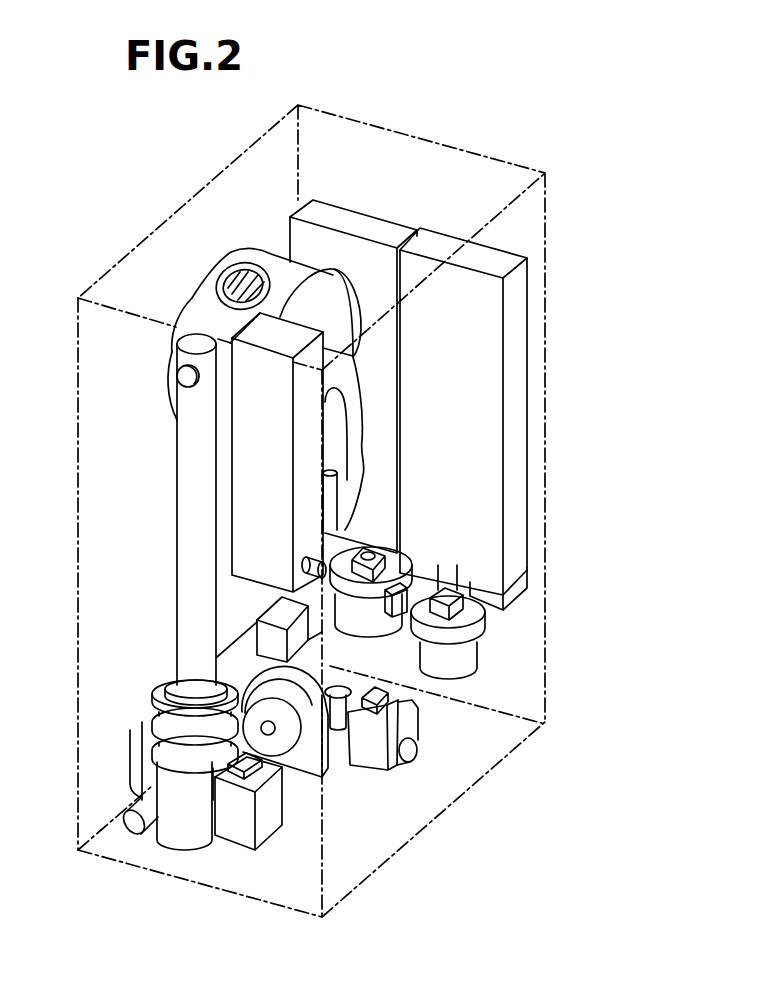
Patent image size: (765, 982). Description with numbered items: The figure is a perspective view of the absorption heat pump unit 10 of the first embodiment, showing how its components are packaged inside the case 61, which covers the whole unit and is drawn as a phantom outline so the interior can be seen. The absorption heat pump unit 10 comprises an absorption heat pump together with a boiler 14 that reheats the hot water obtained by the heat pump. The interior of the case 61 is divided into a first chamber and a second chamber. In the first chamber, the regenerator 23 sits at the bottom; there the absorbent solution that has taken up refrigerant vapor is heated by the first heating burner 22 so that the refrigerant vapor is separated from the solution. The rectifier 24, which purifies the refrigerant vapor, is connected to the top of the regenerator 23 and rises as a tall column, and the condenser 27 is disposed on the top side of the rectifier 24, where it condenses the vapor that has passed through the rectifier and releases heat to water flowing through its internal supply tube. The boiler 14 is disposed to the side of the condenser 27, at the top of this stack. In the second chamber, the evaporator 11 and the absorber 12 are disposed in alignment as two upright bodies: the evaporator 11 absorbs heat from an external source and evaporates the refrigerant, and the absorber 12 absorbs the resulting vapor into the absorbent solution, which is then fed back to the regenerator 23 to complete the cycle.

The absorption heat pump unit 10 is at (533, 125).
The evaporator 11 is at (503, 258).
The absorber 12 is at (356, 212).
The boiler 14 is at (200, 309).
The first heating burner 22 is at (233, 825).
The regenerator 23 is at (178, 815).
The rectifier 24 is at (192, 536).
The condenser 27 is at (265, 397).
The case 61 is at (433, 137).